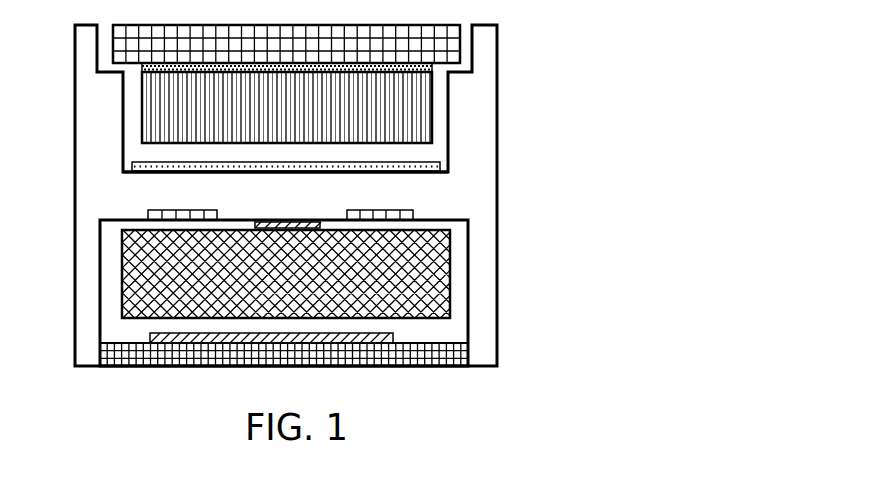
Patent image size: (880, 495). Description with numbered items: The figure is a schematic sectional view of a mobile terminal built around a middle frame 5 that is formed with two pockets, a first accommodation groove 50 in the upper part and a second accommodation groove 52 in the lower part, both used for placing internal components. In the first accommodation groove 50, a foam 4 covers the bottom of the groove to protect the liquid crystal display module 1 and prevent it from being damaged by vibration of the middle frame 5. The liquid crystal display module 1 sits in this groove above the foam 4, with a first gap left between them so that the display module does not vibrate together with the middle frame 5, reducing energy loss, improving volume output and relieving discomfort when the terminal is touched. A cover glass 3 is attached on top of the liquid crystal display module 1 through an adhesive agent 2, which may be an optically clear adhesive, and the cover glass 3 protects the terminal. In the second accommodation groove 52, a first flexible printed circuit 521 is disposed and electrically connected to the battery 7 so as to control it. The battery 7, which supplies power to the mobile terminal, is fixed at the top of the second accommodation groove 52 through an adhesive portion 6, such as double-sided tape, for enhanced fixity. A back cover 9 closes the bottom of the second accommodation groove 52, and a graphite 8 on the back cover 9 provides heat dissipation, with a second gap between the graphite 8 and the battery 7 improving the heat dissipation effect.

The first accommodation groove 50 is at (137, 148).
The liquid crystal display module 1 is at (433, 102).
The adhesive agent 2 is at (433, 68).
The cover glass 3 is at (461, 43).
The foam 4 is at (443, 167).
The middle frame 5 is at (290, 185).
The second accommodation groove 52 is at (113, 285).
The first flexible printed circuit 521 is at (413, 212).
The adhesive portion 6 is at (318, 224).
The battery 7 is at (451, 269).
The graphite 8 is at (307, 332).
The back cover 9 is at (453, 355).